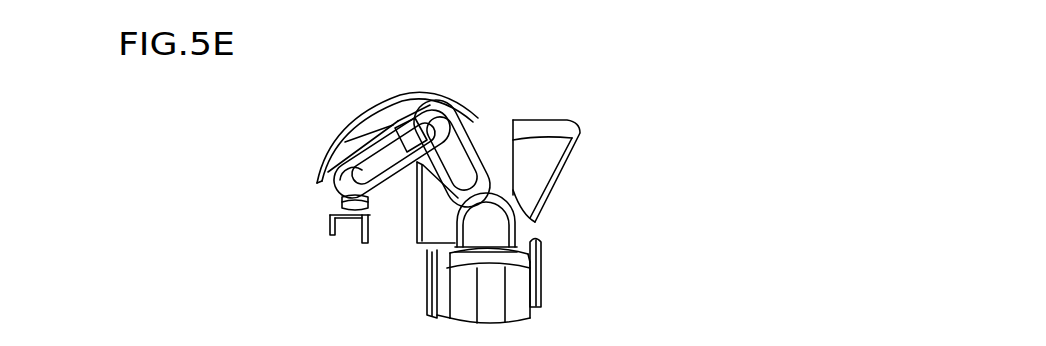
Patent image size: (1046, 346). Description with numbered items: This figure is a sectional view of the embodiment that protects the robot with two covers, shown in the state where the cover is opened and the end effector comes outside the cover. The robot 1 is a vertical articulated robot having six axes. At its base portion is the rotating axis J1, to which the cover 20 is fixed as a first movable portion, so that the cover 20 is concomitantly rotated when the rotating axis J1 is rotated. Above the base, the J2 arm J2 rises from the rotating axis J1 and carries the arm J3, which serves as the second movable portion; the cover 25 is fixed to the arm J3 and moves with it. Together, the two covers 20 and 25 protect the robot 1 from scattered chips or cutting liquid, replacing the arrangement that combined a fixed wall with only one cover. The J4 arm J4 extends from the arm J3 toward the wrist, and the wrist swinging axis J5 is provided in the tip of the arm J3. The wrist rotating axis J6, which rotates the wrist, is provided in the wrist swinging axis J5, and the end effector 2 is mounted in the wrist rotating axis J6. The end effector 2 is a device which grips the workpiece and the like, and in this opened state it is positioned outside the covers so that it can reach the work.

The robot 1 is at (457, 155).
The end effector 2 is at (332, 233).
The cover 20 is at (562, 178).
The cover 25 is at (362, 115).
The rotating axis J1 is at (500, 258).
The J2 arm J2 is at (457, 167).
The arm J3 is at (447, 100).
The J4 arm J4 is at (382, 165).
The wrist swinging axis J5 is at (345, 187).
The wrist rotating axis J6 is at (342, 218).